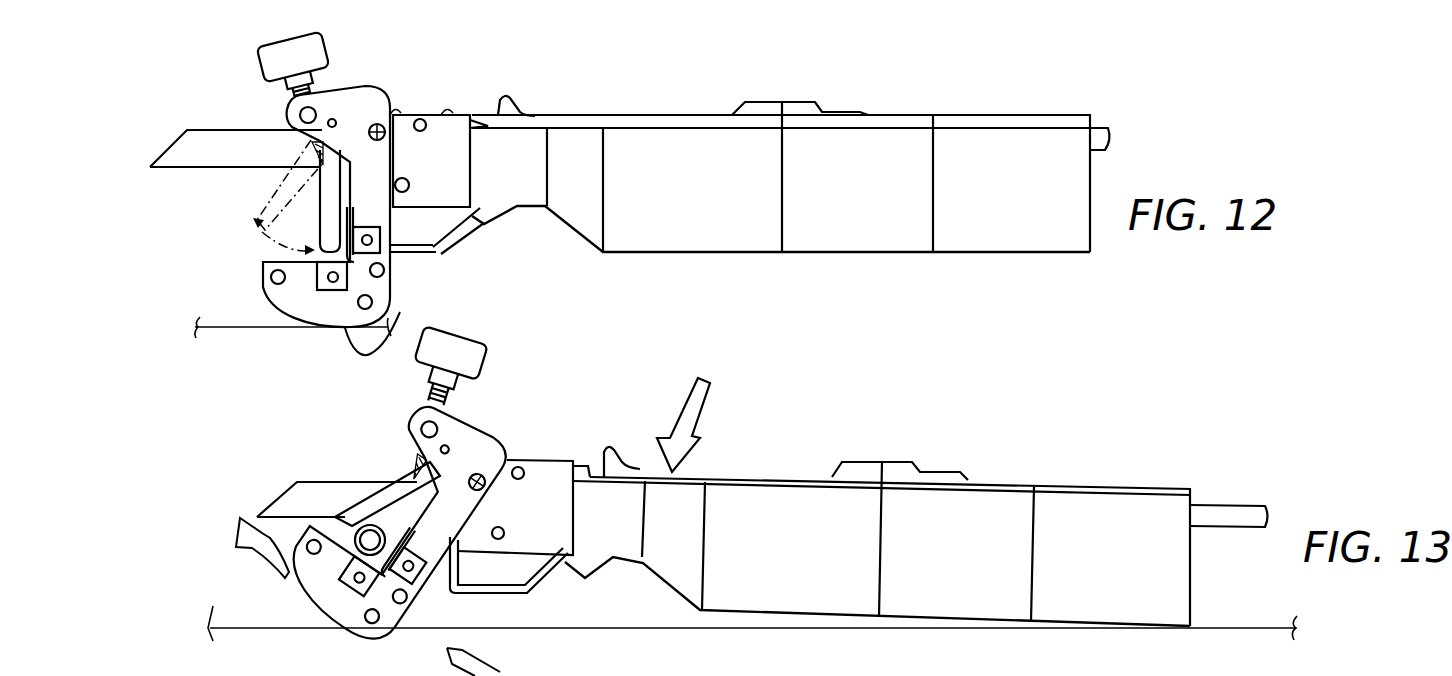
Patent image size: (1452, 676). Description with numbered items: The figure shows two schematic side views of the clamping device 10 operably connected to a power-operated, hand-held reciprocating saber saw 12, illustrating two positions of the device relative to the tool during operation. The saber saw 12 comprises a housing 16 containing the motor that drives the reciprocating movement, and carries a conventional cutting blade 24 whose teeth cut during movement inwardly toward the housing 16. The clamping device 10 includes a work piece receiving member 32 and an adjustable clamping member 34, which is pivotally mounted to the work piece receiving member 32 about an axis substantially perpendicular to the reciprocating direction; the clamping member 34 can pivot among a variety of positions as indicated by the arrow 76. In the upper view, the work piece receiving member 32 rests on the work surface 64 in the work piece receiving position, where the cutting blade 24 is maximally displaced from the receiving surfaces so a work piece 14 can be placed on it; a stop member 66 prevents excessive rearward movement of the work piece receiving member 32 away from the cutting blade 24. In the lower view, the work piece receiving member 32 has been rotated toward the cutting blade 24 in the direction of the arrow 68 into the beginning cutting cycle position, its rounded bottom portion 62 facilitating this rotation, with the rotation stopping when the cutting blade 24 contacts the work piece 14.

In FIG. 12, the clamping device 10 is at (301, 194).
In FIG. 13, the clamping device 10 is at (408, 488).
In FIG. 12, the power-operated hand-held saber saw 12 is at (857, 250).
In FIG. 13, the power-operated hand-held saber saw 12 is at (1030, 476).
In FIG. 13, the work piece 14 is at (364, 524).
In FIG. 12, the housing 16 is at (622, 254).
In FIG. 13, the housing 16 is at (751, 612).
In FIG. 12, the cutting blade 24 is at (173, 135).
In FIG. 13, the cutting blade 24 is at (270, 495).
In FIG. 12, the work piece receiving member 32 is at (393, 269).
In FIG. 13, the work piece receiving member 32 is at (483, 412).
In FIG. 12, the clamping member 34 is at (440, 255).
In FIG. 13, the clamping member 34 is at (388, 474).
In FIG. 12, the bottom portion 62 is at (387, 326).
In FIG. 12, the work surface 64 is at (249, 328).
In FIG. 12, the stop member 66 is at (409, 186).
In FIG. 13, the arrow 68 is at (252, 565).
In FIG. 12, the arrow 76 is at (258, 234).